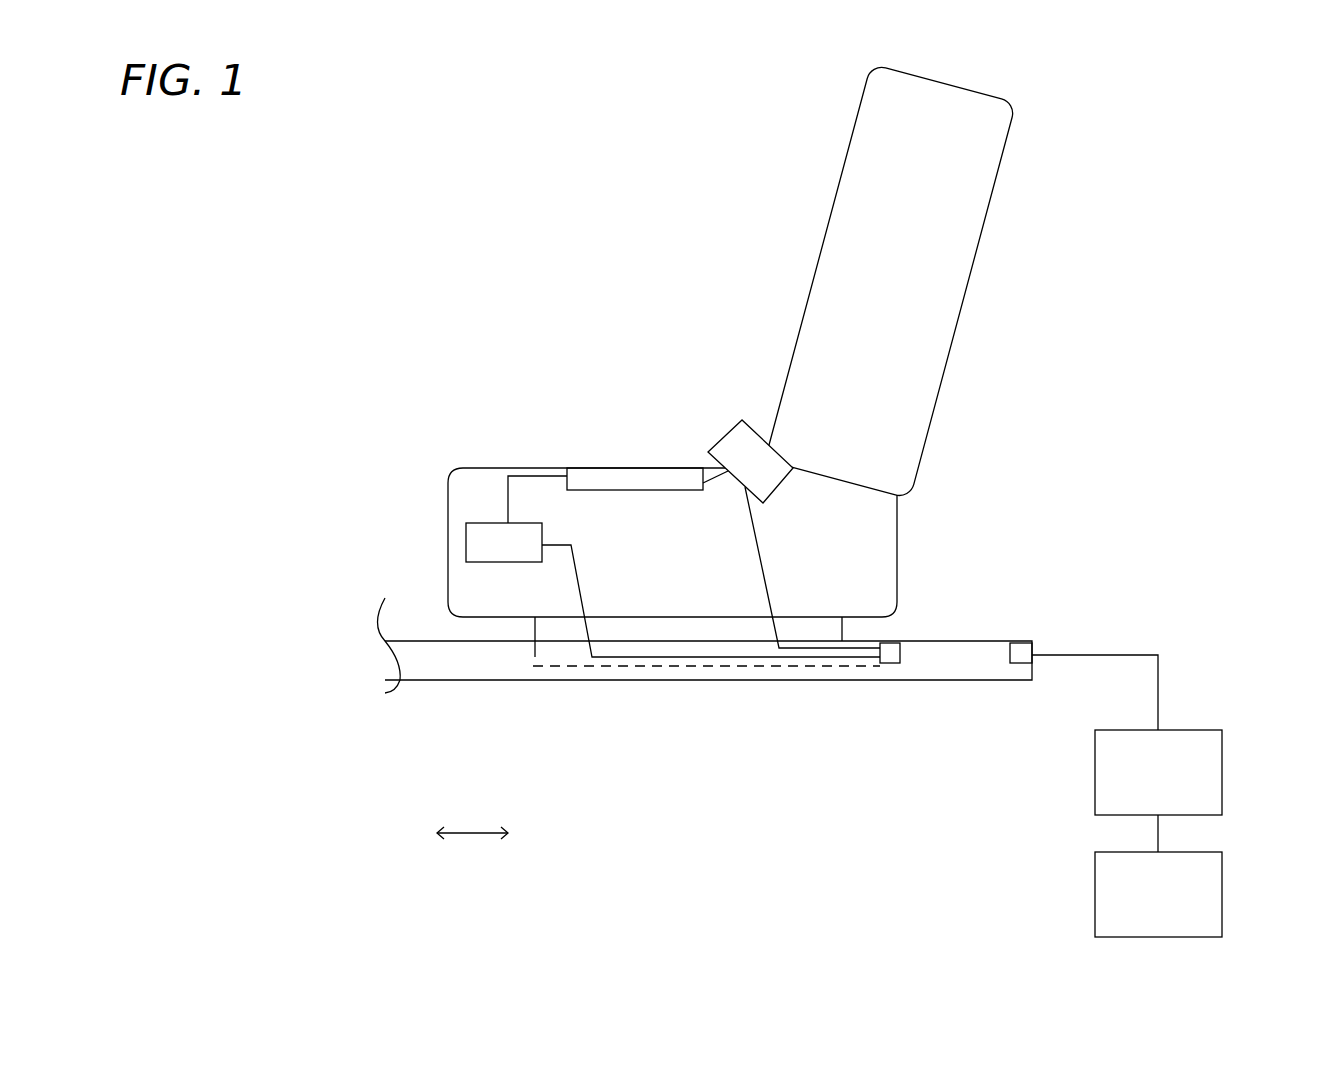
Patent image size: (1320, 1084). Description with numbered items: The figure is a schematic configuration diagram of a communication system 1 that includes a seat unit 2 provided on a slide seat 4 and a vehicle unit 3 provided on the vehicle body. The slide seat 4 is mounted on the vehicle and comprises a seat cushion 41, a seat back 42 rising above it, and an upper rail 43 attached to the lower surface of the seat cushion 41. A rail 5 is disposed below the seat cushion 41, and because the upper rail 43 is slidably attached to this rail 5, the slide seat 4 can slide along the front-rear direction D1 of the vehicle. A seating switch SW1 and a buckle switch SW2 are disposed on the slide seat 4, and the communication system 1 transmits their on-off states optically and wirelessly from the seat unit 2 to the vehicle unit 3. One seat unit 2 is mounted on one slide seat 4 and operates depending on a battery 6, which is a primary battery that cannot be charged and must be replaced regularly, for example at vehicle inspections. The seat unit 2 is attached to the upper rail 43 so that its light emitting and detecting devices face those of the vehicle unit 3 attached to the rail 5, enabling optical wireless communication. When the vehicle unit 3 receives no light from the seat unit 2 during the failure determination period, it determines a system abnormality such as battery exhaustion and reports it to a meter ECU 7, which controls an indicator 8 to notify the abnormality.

The communication system 1 is at (908, 773).
The seat unit 2 is at (885, 663).
The vehicle unit 3 is at (1022, 663).
The slide seat 4 is at (732, 360).
The seat cushion 41 is at (483, 468).
The seat back 42 is at (957, 327).
The upper rail 43 is at (843, 630).
The rail 5 is at (507, 680).
The battery 6 is at (466, 543).
The meter ECU 7 is at (1223, 790).
The indicator 8 is at (1223, 900).
The seating switch SW1 is at (648, 468).
The buckle switch SW2 is at (733, 427).
The front-rear direction D1 is at (472, 836).